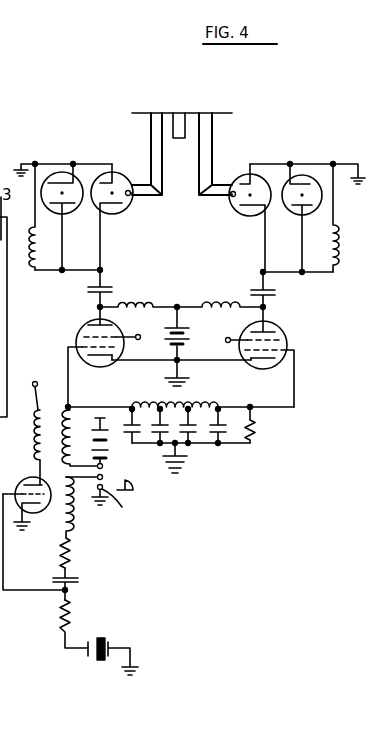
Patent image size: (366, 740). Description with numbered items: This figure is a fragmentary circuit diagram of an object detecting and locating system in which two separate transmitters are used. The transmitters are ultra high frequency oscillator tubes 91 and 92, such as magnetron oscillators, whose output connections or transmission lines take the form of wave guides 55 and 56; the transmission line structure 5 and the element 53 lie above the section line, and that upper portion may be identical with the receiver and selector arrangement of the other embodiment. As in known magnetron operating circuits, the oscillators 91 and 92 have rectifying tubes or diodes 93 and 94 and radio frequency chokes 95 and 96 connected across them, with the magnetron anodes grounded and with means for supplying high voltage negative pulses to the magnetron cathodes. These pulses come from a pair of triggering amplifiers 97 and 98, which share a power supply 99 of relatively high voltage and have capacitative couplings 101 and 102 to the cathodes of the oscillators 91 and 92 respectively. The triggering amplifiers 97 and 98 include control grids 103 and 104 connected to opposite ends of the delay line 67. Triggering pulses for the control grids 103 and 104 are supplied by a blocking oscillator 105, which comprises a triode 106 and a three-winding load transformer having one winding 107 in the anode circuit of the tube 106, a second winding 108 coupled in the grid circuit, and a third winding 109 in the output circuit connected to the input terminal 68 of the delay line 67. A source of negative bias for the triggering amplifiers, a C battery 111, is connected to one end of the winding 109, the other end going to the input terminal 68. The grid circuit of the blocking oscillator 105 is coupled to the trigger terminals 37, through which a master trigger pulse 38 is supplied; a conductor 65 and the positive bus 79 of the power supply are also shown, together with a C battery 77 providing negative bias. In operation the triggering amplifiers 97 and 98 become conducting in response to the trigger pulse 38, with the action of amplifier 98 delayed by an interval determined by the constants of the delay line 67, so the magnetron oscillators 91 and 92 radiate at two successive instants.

The transmission line section 5 is at (182, 136).
The cavity resonator probe 53 is at (178, 115).
The wave guide 55 is at (160, 113).
The wave guide 56 is at (210, 115).
The conductor 65 is at (7, 338).
The delay line 67 is at (180, 427).
The input terminal 68 is at (132, 407).
The C battery 77 is at (103, 633).
The positive bus 79 is at (27, 387).
The ultra high frequency oscillator tube 91 is at (125, 177).
The ultra high frequency oscillator tube 92 is at (240, 177).
The rectifying tube 93 is at (60, 173).
The rectifying tube 94 is at (307, 177).
The radio frequency choke 95 is at (27, 253).
The radio frequency choke 96 is at (336, 270).
The triggering amplifier 97 is at (95, 357).
The triggering amplifier 98 is at (273, 357).
The power supply 99 is at (193, 330).
The capacitative coupling 101 is at (112, 290).
The capacitative coupling 102 is at (256, 292).
The control grid 103 is at (100, 355).
The control grid 104 is at (263, 358).
The blocking oscillator 105 is at (40, 552).
The triode 106 is at (25, 505).
The winding 107 is at (33, 441).
The second winding 108 is at (74, 512).
The third winding 109 is at (72, 425).
The C battery 111 is at (109, 443).
The trigger terminals 37 is at (121, 505).
The trigger pulse 38 is at (139, 493).